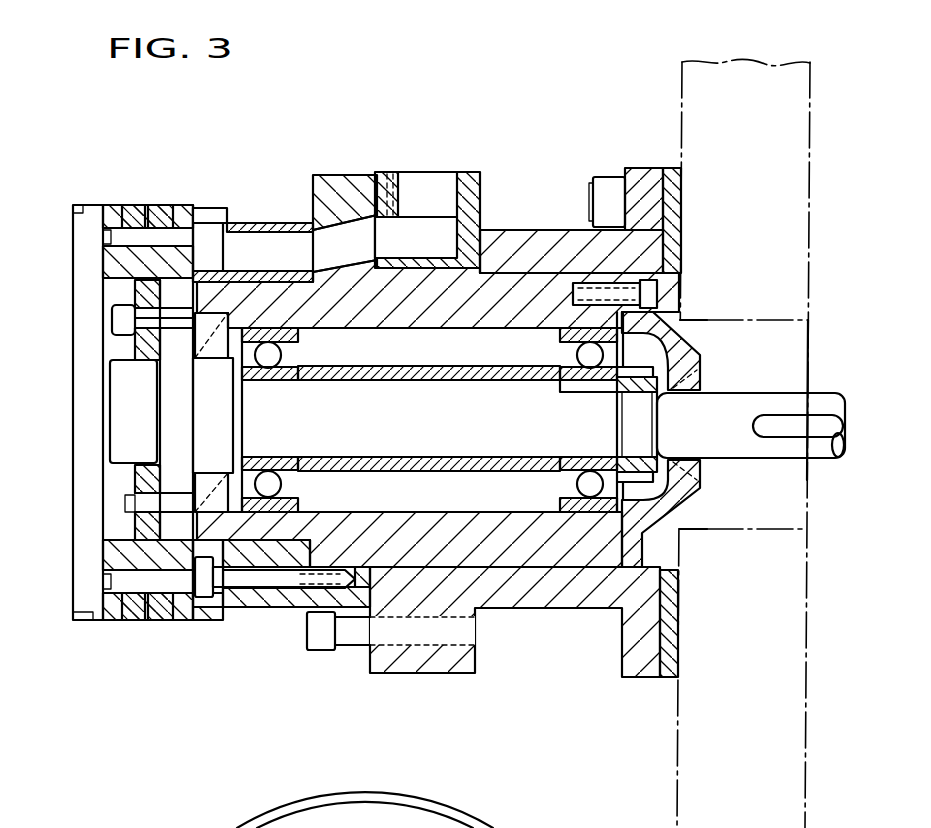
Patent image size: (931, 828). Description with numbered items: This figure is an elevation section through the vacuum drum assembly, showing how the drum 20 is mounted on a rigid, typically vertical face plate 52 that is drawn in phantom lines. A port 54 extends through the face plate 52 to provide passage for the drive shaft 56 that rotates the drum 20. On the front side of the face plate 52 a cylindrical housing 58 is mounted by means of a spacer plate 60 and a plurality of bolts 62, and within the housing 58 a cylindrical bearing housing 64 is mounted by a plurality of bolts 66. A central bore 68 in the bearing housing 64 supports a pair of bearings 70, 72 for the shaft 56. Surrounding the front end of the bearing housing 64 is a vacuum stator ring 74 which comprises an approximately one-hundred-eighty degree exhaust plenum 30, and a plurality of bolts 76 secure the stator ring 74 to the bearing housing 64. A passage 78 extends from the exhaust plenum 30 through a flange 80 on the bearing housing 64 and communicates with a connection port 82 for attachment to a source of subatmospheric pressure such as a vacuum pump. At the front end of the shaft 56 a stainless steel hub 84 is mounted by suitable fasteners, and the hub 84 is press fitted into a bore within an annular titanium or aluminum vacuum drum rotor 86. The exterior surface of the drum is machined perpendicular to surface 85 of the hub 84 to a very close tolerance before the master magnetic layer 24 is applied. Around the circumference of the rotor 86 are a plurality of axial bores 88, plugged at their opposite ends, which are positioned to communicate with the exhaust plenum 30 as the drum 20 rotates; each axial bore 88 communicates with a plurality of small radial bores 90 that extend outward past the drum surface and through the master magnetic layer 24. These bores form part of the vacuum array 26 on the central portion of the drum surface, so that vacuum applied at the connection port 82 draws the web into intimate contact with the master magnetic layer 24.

The drum 20 is at (73, 518).
The master magnetic layer 24 is at (80, 205).
The array 26 is at (118, 624).
The exhaust plenum 30 is at (212, 243).
The face plate 52 is at (790, 267).
The port 54 is at (780, 320).
The drive shaft 56 is at (822, 452).
The cylindrical housing 58 is at (540, 245).
The spacer plate 60 is at (673, 168).
The bolts 62 is at (610, 190).
The bearing housing 64 is at (523, 547).
The bolts 66 is at (307, 630).
The central bore 68 is at (447, 500).
The bearing 70 is at (267, 498).
The bearing 72 is at (562, 487).
The vacuum stator ring 74 is at (232, 217).
The bolts 76 is at (200, 580).
The passage 78 is at (349, 227).
The flange 80 is at (341, 173).
The connection port 82 is at (441, 190).
The hub 84 is at (135, 352).
The surface of hub 85 is at (133, 480).
The vacuum drum rotor 86 is at (105, 270).
The axial bores 88 is at (105, 237).
The radial bores 90 is at (173, 205).